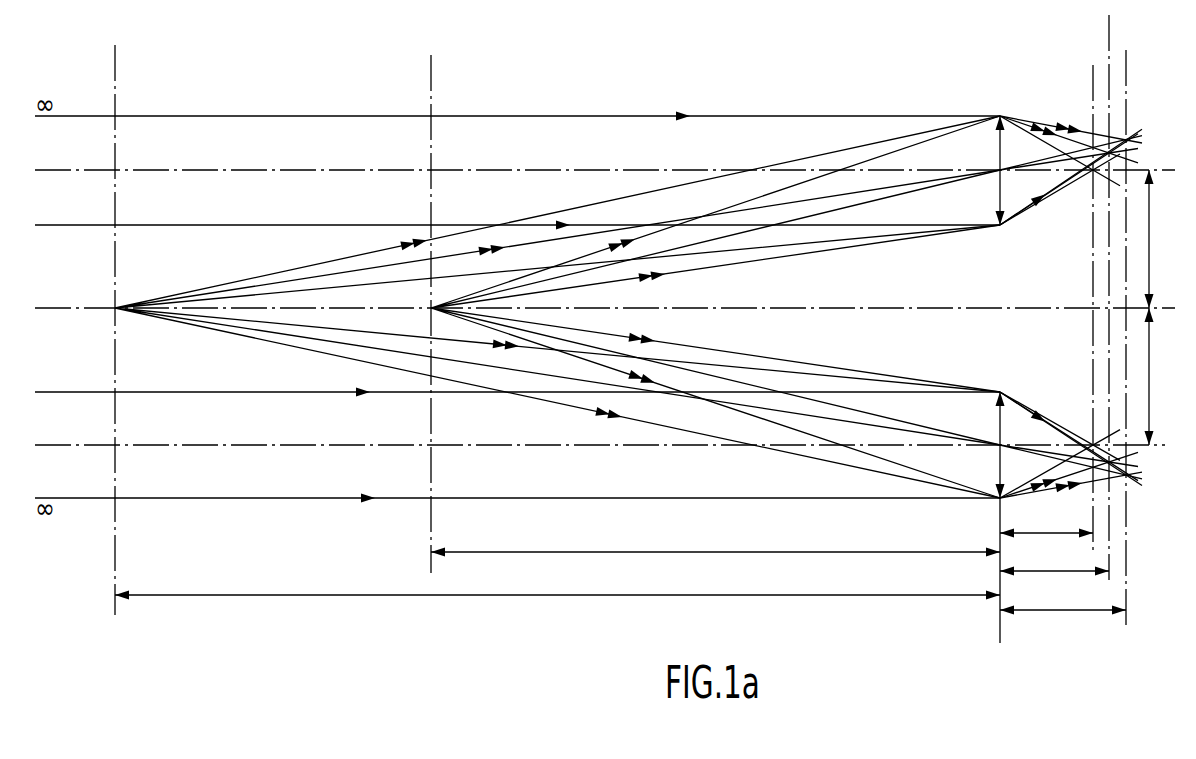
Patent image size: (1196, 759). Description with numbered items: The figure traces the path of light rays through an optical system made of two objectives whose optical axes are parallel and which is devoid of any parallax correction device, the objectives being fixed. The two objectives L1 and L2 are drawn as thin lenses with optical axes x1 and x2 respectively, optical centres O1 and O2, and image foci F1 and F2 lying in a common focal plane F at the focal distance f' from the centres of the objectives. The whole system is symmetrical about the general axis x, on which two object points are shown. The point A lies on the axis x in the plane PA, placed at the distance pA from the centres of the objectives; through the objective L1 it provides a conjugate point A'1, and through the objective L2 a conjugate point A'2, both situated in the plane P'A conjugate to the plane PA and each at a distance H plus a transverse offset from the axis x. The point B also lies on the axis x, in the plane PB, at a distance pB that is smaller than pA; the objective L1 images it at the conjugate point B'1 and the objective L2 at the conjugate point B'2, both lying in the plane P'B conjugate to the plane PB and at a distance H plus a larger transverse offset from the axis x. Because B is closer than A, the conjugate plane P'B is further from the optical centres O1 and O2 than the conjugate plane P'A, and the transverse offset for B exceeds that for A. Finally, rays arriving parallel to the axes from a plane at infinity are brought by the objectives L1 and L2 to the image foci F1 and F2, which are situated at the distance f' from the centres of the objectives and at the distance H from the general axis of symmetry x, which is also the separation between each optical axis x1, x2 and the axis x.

The point A is at (546, 307).
The point B is at (708, 307).
The objective L1 is at (1006, 497).
The objective L2 is at (1010, 190).
The optical centre O1 is at (1058, 463).
The optical centre O2 is at (1071, 170).
The image focal plane F is at (1046, 308).
The image focus F1 is at (1060, 441).
The image focus F2 is at (1060, 170).
The conjugate point A'1 is at (1079, 445).
The conjugate point A'2 is at (1093, 170).
The conjugate point B'1 is at (1078, 456).
The conjugate point B'2 is at (1077, 168).
The plane PA is at (542, 344).
The plane PB is at (702, 319).
The conjugate plane P'A is at (1054, 308).
The conjugate plane P'B is at (1076, 335).
The distance H is at (1156, 307).
The general axis of symmetry x is at (612, 314).
The optical axis x1 is at (612, 442).
The optical axis x2 is at (613, 180).